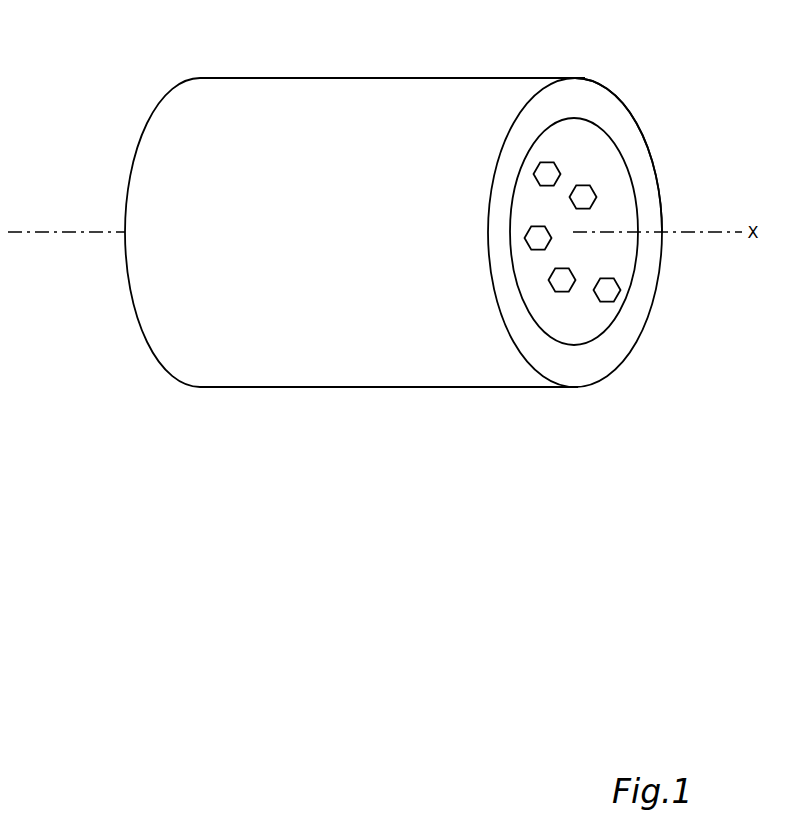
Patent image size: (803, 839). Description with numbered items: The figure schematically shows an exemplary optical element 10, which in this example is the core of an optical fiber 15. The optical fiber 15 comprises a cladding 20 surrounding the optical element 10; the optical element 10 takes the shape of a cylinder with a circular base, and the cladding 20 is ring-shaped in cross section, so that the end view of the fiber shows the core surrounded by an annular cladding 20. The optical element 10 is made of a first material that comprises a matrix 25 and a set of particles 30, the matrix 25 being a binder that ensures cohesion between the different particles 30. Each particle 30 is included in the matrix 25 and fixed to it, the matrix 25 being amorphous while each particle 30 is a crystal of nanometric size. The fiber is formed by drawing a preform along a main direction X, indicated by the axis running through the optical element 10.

The optical element 10 is at (636, 197).
The optical fiber 15 is at (132, 121).
The cladding 20 is at (654, 127).
The matrix 25 is at (575, 118).
The particles 30 is at (606, 287).